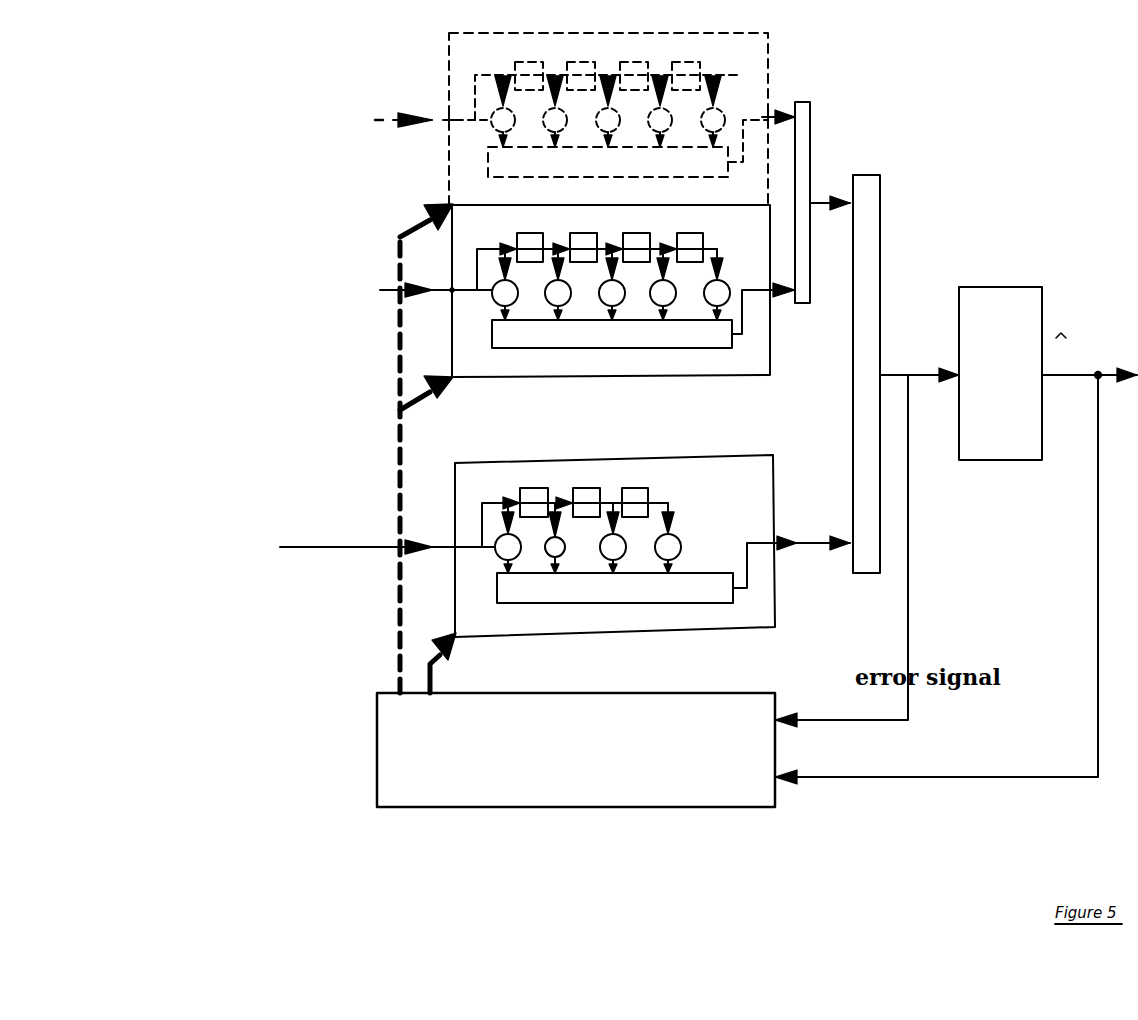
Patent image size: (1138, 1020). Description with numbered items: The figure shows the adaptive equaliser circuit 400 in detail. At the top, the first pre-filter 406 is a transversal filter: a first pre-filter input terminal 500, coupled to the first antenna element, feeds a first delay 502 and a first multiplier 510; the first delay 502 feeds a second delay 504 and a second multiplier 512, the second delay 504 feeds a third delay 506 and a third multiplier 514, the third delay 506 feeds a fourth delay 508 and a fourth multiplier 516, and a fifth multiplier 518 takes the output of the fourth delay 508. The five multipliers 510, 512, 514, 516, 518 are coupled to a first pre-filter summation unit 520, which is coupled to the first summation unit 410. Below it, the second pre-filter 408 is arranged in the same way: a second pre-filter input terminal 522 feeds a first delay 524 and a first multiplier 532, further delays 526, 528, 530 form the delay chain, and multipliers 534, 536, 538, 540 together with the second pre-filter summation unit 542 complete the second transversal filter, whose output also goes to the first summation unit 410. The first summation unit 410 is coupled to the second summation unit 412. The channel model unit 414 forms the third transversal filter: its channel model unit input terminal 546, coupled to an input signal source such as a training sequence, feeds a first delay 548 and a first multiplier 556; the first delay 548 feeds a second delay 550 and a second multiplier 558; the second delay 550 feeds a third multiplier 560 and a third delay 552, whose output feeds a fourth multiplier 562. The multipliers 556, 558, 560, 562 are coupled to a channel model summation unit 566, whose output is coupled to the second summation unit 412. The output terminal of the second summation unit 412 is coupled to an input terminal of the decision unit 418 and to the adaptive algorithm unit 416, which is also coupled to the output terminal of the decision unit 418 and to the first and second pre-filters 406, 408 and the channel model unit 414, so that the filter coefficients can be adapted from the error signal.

The adaptive equaliser circuit 400 is at (316, 855).
The first pre-filter 406 is at (778, 84).
The second pre-filter 408 is at (752, 378).
The first summation unit 410 is at (812, 130).
The second summation unit 412 is at (878, 210).
The channel model unit 414 is at (772, 628).
The adaptive algorithm unit 416 is at (651, 796).
The decision unit 418 is at (1000, 288).
The first pre-filter input terminal 500 is at (446, 118).
The first delay 502 is at (522, 62).
The second delay 504 is at (574, 62).
The third delay 506 is at (627, 62).
The fourth delay 508 is at (679, 62).
The first multiplier 510 is at (492, 124).
The second multiplier 512 is at (548, 112).
The third multiplier 514 is at (598, 116).
The fourth multiplier 516 is at (650, 116).
The fifth multiplier 518 is at (722, 112).
The first pre-filter summation unit 520 is at (632, 170).
The second pre-filter input terminal 522 is at (446, 292).
The first delay 524 is at (522, 233).
The second delay 526 is at (580, 233).
The third delay 528 is at (642, 233).
The fourth delay 530 is at (692, 233).
The first multiplier 532 is at (496, 298).
The second multiplier 534 is at (547, 292).
The third multiplier 536 is at (601, 292).
The fourth multiplier 538 is at (653, 293).
The fifth multiplier 540 is at (706, 293).
The second pre-filter summation unit 542 is at (552, 340).
The channel model unit input terminal 546 is at (450, 550).
The first delay 548 is at (535, 488).
The second delay 550 is at (590, 488).
The third delay 552 is at (638, 488).
The first multiplier 556 is at (498, 555).
The second multiplier 558 is at (560, 540).
The third multiplier 560 is at (620, 538).
The fourth multiplier 562 is at (676, 538).
The channel model summation unit 566 is at (668, 600).